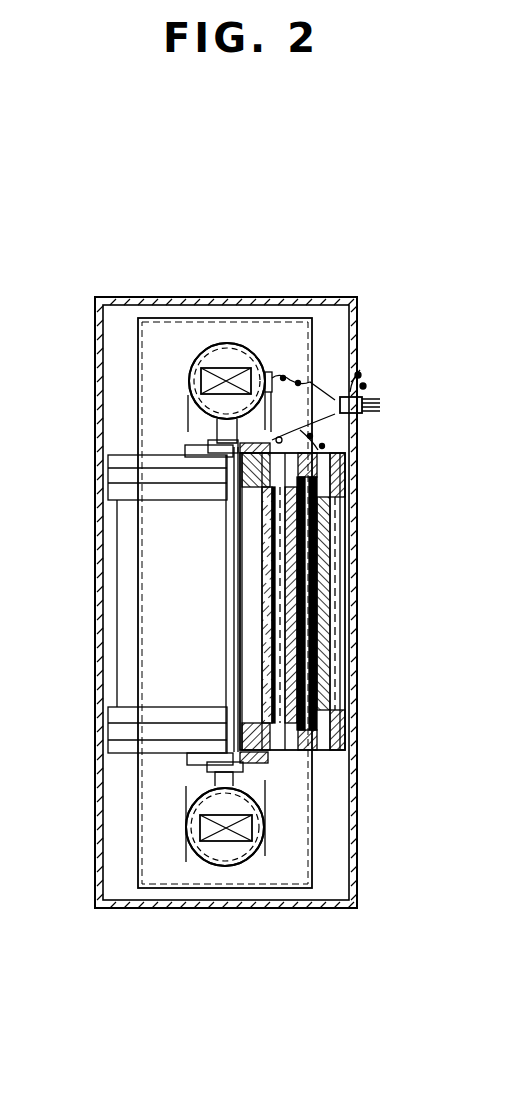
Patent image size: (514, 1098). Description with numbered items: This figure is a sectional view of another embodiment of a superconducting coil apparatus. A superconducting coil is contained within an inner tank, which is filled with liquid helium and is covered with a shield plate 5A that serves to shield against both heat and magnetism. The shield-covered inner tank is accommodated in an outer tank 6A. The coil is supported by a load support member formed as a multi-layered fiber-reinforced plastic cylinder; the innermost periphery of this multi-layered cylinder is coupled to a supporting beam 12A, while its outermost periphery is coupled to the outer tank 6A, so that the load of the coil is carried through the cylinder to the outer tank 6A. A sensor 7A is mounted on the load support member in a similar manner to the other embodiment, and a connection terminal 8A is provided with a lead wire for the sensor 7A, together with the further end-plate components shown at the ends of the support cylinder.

The shield plate 5A is at (322, 342).
The outer tank 6A is at (98, 842).
The sensor 7A is at (338, 442).
The connection terminal 8A is at (362, 393).
The supporting beam 12A is at (230, 660).